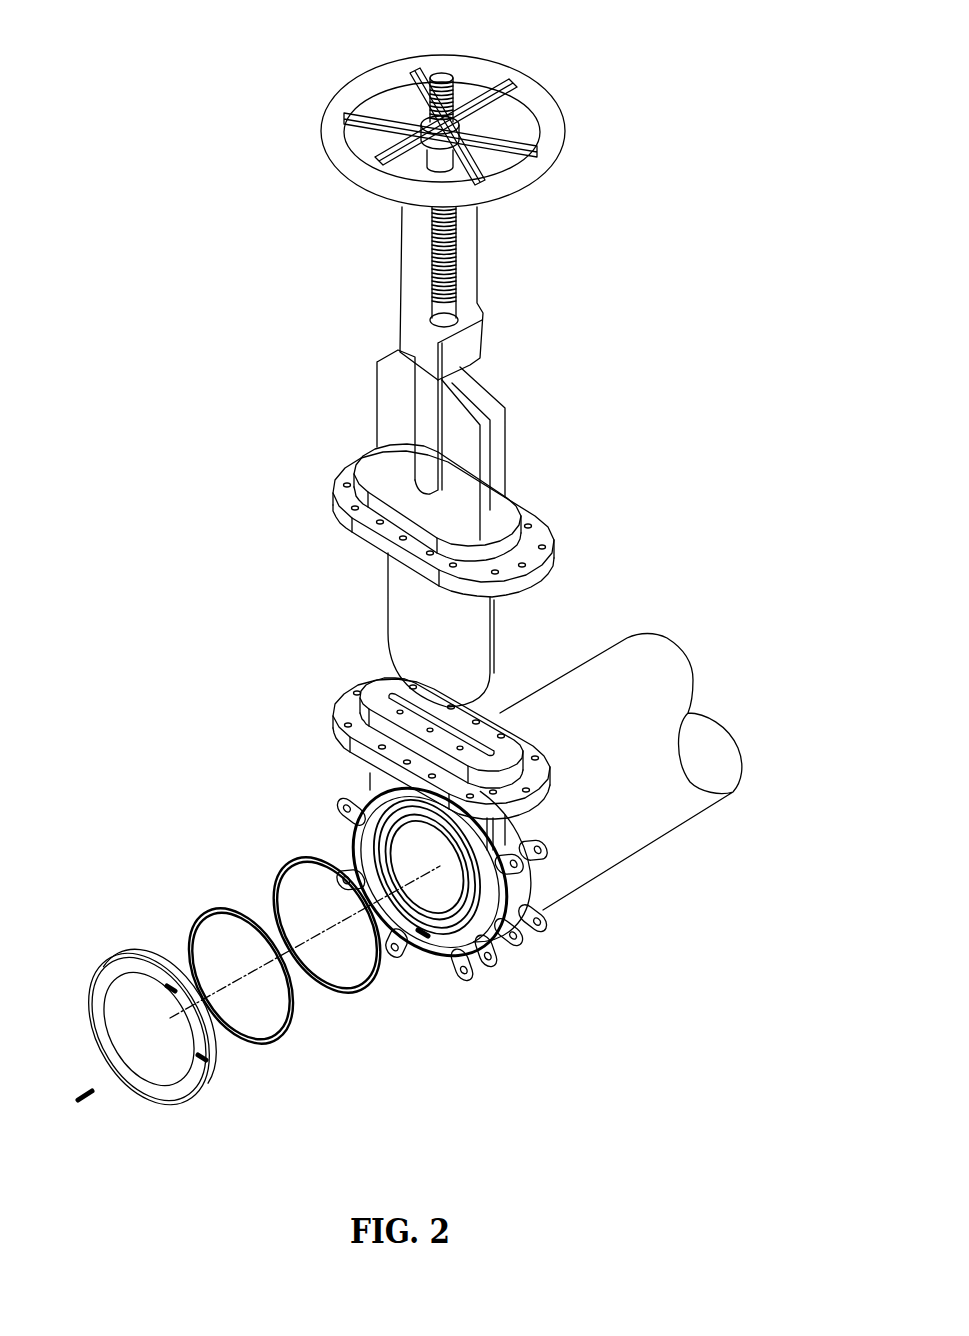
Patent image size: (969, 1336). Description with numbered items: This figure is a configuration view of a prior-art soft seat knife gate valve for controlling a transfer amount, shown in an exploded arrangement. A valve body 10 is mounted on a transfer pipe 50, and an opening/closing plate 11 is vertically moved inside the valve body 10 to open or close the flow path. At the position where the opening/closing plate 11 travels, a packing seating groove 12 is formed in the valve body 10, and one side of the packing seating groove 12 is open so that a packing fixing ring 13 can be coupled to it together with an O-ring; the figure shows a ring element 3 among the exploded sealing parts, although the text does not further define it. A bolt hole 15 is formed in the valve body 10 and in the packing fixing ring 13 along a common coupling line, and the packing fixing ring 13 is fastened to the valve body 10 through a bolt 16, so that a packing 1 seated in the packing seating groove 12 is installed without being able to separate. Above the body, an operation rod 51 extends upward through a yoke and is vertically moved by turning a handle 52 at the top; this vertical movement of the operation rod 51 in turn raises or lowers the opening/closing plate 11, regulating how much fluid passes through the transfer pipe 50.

The packing 1 is at (257, 924).
The seal ring 3 is at (360, 1045).
The valve body 10 is at (512, 967).
The opening/closing plate 11 is at (500, 612).
The packing seating groove 12 is at (430, 936).
The packing fixing ring 13 is at (193, 1087).
The bolt hole 15 is at (357, 830).
The bolt 16 is at (85, 1105).
The transfer pipe 50 is at (673, 833).
The operation rod 51 is at (457, 250).
The handle 52 is at (545, 108).